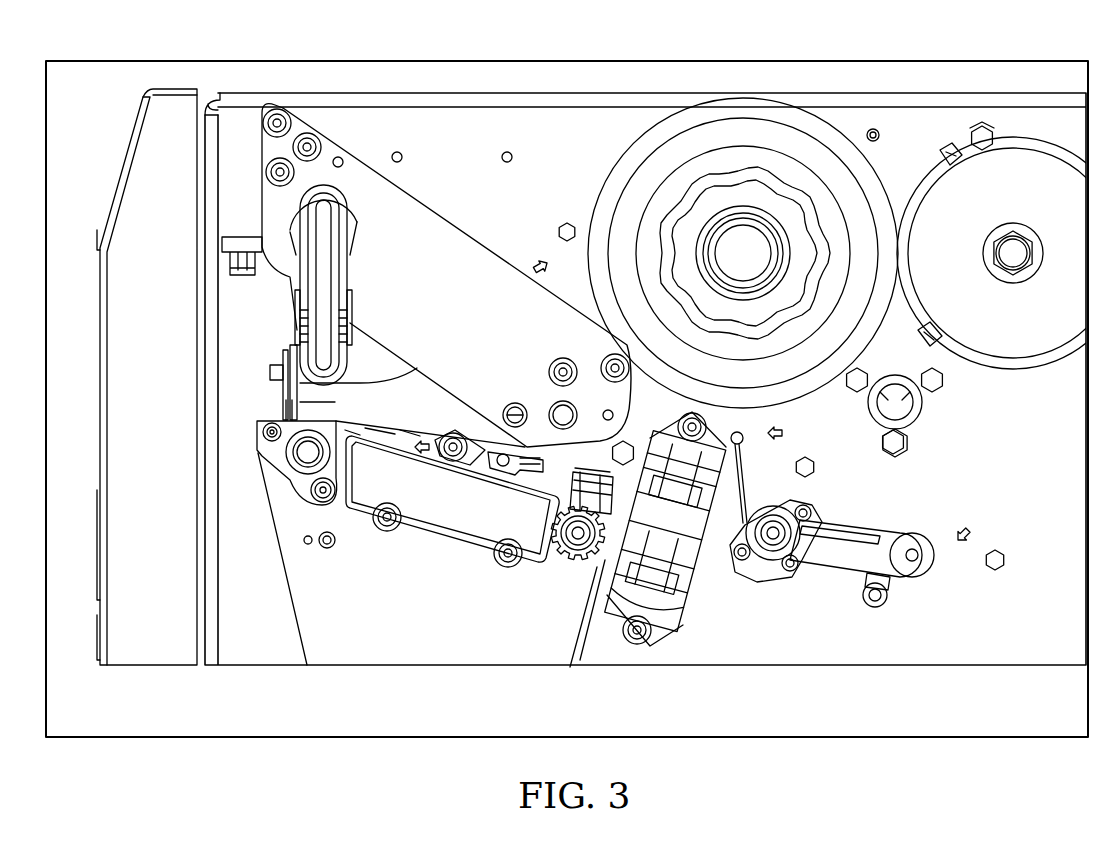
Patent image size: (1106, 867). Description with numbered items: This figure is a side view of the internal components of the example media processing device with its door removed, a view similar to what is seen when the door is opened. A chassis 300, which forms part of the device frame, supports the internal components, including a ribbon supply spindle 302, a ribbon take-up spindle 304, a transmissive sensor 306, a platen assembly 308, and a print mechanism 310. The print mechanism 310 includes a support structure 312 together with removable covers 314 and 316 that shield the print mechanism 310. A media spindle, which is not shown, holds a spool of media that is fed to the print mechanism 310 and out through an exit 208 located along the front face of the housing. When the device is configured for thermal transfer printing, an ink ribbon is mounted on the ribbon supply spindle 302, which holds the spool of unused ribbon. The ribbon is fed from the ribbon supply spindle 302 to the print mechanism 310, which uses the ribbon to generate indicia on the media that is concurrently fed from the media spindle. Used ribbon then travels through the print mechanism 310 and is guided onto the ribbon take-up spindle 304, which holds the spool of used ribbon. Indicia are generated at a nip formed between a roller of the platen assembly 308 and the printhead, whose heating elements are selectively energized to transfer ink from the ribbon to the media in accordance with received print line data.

The chassis 300 is at (515, 135).
The ribbon supply spindle 302 is at (1010, 252).
The ribbon take-up spindle 304 is at (743, 253).
The transmissive sensor 306 is at (677, 627).
The platen assembly 308 is at (303, 473).
The print mechanism 310 is at (483, 230).
The support structure 312 is at (353, 160).
The removable cover 314 is at (430, 218).
The removable cover 316 is at (297, 400).
The exit 208 is at (273, 412).